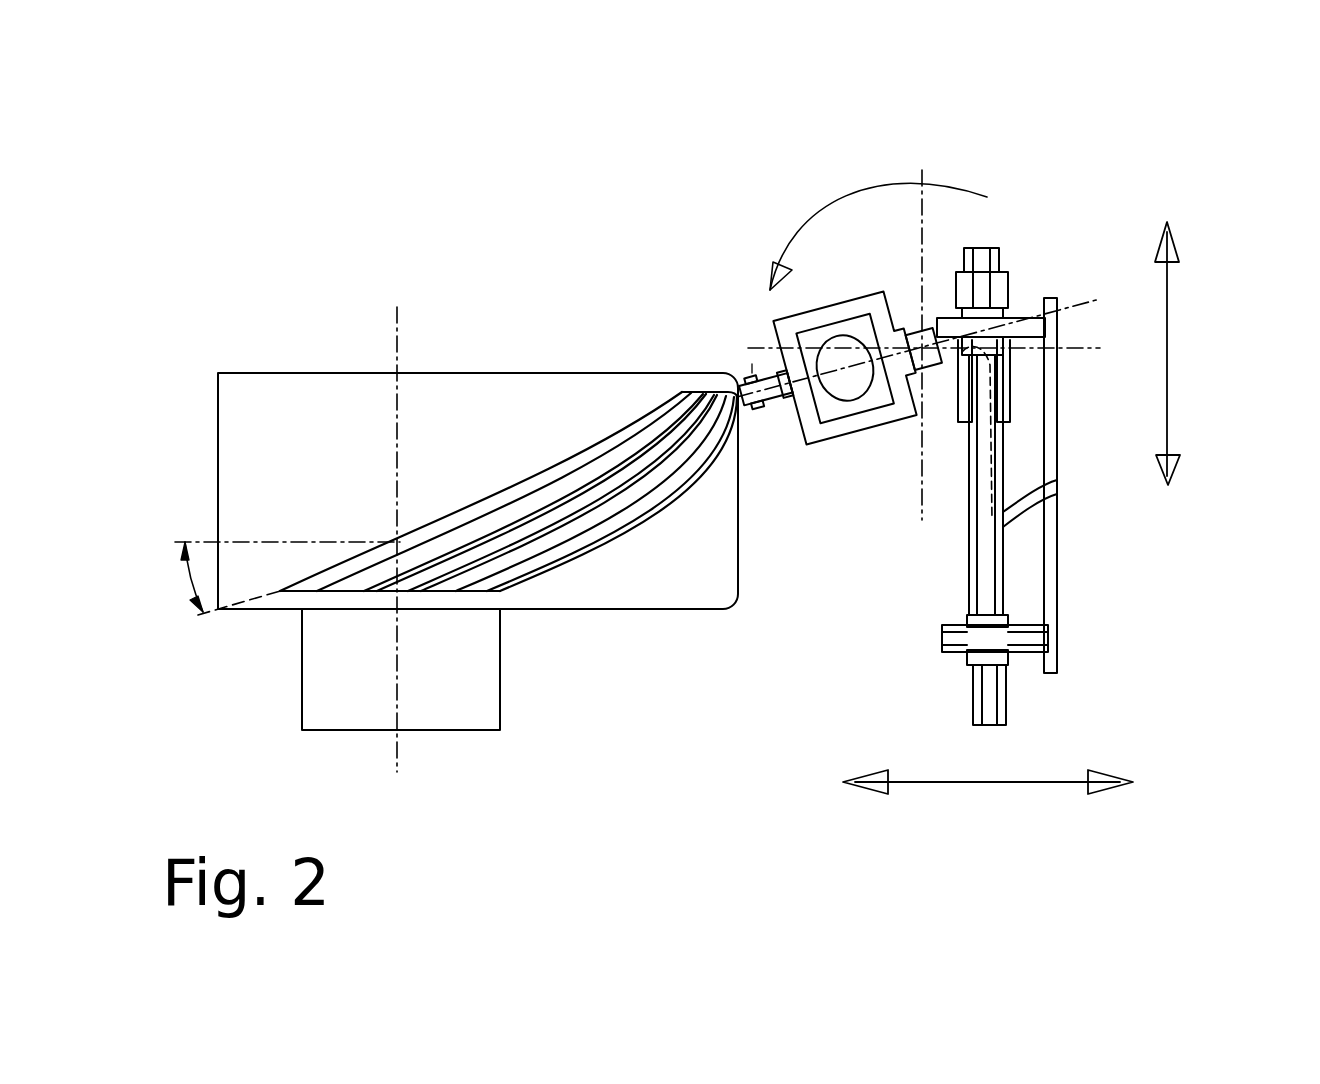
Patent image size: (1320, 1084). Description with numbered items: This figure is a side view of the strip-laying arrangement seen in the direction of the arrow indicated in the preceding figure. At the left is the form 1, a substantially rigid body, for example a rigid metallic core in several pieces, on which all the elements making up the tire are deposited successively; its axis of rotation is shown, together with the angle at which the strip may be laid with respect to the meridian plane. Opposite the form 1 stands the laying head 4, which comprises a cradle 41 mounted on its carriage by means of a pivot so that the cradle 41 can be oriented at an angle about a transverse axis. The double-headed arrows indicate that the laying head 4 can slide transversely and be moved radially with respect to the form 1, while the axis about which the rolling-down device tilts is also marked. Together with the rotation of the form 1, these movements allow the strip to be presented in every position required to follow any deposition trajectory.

The form 1 is at (272, 412).
The laying head 4 is at (997, 218).
The cradle 41 is at (823, 448).